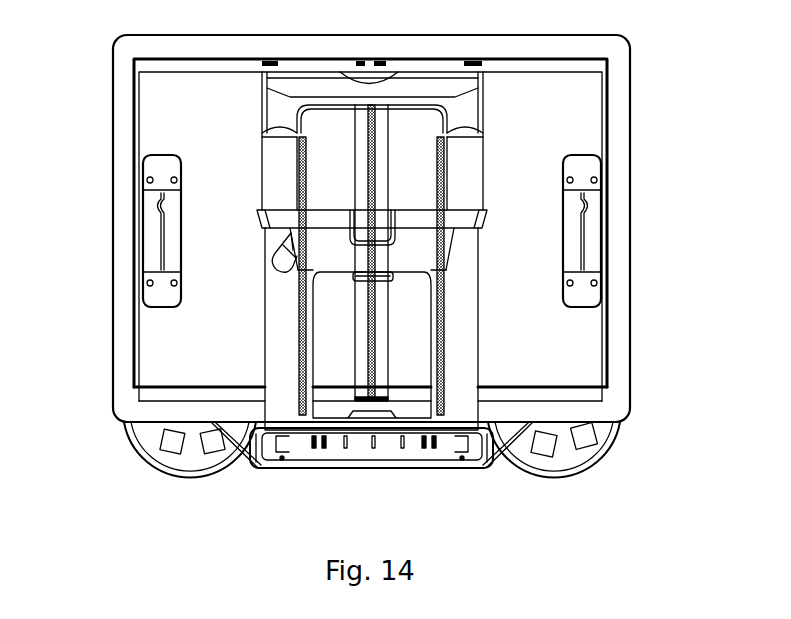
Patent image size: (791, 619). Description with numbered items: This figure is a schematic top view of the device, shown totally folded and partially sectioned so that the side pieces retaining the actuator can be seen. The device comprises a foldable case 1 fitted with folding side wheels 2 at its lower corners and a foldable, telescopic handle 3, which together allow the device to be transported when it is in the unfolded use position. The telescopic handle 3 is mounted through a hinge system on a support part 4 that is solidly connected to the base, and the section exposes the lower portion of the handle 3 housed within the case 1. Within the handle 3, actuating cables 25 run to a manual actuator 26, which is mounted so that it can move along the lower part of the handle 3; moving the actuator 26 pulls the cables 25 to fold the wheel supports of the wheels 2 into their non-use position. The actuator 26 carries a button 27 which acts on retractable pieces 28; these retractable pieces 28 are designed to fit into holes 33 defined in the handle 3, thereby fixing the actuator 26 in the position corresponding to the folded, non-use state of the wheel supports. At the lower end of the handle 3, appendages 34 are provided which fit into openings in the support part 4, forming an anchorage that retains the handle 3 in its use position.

The foldable case 1 is at (110, 113).
The folding side wheels 2 is at (162, 462).
The foldable, telescopic handle 3 is at (322, 88).
The support part 4 is at (265, 460).
The actuating cables 25 is at (313, 320).
The manual actuator 26 is at (413, 257).
The button 27 is at (393, 275).
The retractable pieces 28 is at (290, 265).
The holes 33 is at (287, 257).
The appendages 34 is at (292, 443).